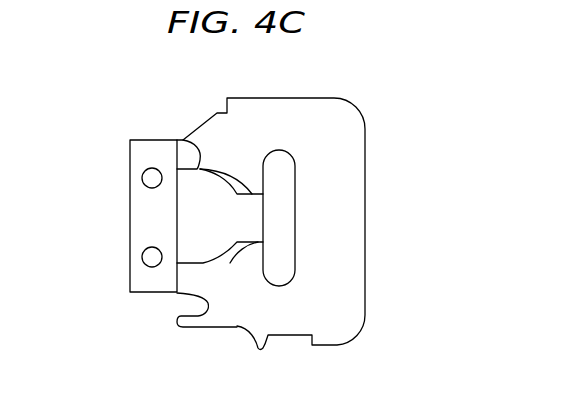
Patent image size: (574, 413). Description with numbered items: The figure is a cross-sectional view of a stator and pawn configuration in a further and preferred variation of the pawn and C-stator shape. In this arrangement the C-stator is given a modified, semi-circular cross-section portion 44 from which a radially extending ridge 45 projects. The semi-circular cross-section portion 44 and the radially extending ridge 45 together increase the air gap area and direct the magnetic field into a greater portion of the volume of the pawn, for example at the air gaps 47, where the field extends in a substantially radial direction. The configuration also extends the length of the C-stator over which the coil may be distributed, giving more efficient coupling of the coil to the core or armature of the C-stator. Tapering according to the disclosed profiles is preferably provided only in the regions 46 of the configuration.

The semi-circular cross-section portion 44 is at (200, 158).
The radially extending ridge 45 is at (263, 210).
The regions 46 is at (231, 259).
The air gaps 47 is at (143, 155).